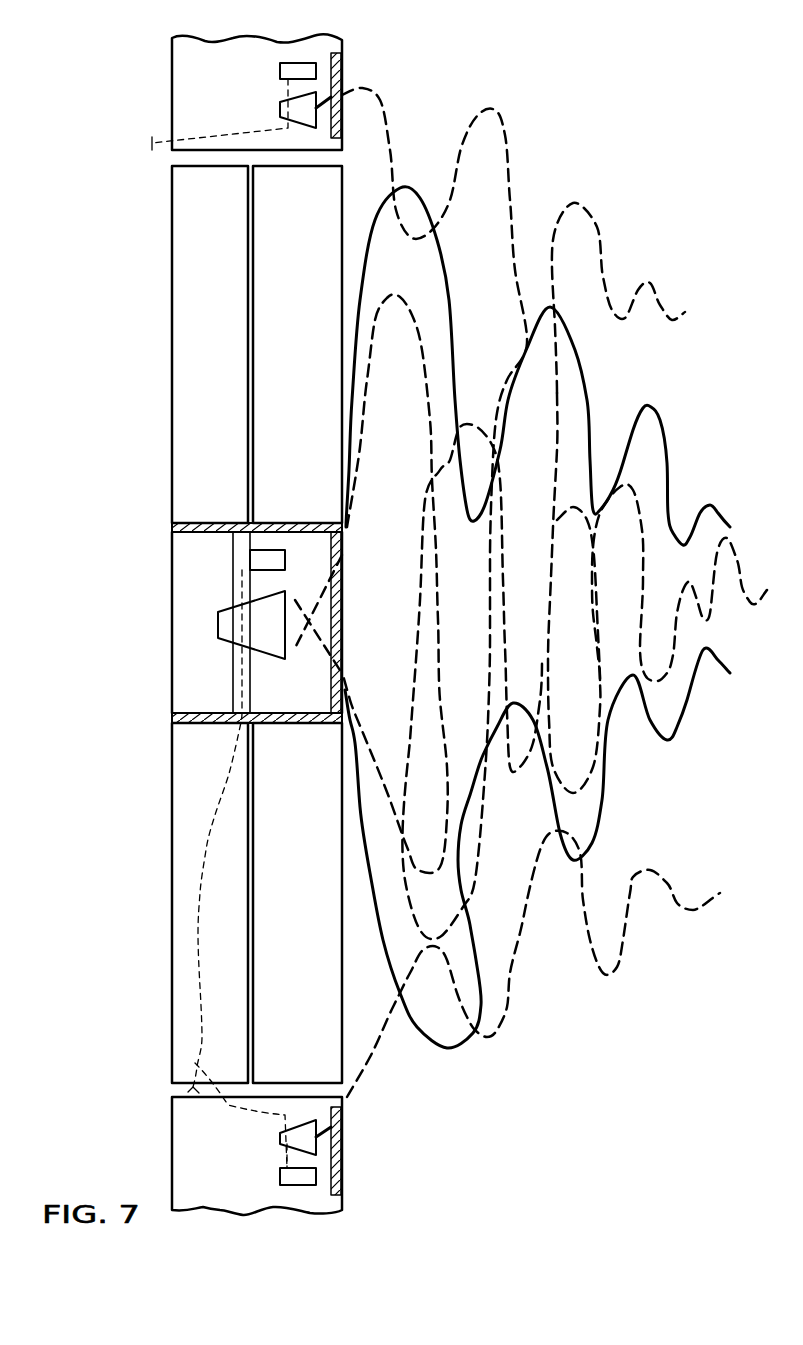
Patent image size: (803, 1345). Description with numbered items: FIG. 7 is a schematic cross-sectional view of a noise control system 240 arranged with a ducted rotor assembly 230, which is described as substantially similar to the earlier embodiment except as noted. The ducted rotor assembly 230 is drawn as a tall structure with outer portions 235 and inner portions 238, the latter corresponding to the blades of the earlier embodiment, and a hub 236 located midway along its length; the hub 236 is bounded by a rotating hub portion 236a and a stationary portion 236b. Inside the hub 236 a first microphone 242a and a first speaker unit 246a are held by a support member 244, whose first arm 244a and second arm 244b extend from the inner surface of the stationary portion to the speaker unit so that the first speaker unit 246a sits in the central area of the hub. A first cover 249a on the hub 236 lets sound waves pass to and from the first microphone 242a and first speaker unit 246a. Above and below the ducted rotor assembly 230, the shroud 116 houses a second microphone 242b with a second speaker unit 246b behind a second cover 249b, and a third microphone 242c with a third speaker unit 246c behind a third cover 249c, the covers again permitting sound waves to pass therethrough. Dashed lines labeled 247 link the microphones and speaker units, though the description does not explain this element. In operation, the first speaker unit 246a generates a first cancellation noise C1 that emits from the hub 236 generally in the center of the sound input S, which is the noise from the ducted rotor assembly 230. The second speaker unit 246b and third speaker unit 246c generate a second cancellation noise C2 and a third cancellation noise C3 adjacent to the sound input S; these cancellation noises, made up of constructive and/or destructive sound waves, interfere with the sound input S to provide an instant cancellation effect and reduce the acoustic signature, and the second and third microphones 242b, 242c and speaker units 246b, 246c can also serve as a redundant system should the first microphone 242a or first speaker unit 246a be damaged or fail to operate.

The noise control system 240 is at (92, 58).
The shroud 116 is at (172, 90).
The second microphone 242b is at (280, 70).
The second speaker unit 246b is at (280, 108).
The second cover 249b is at (343, 78).
The electrical wiring 247 is at (200, 136).
The ducted rotor assembly 230 is at (148, 182).
The left light guide portion 235 is at (172, 228).
The blades 238 is at (248, 305).
The hub 236 is at (146, 537).
The stationary portion of the hub 236b is at (215, 523).
The rotating hub portion 236a is at (284, 523).
The first microphone 242a is at (255, 560).
The second arm 244b is at (232, 588).
The first speaker unit 246a is at (218, 625).
The first arm 244a is at (232, 660).
The support member 244 is at (226, 682).
The first cover 249a is at (325, 723).
The third speaker unit 246c is at (280, 1138).
The third microphone 242c is at (280, 1178).
The third cover 249c is at (343, 1160).
The sound input S is at (446, 262).
The first cancellation noise C1 is at (427, 333).
The second cancellation noise C2 is at (497, 112).
The third cancellation noise C3 is at (627, 967).